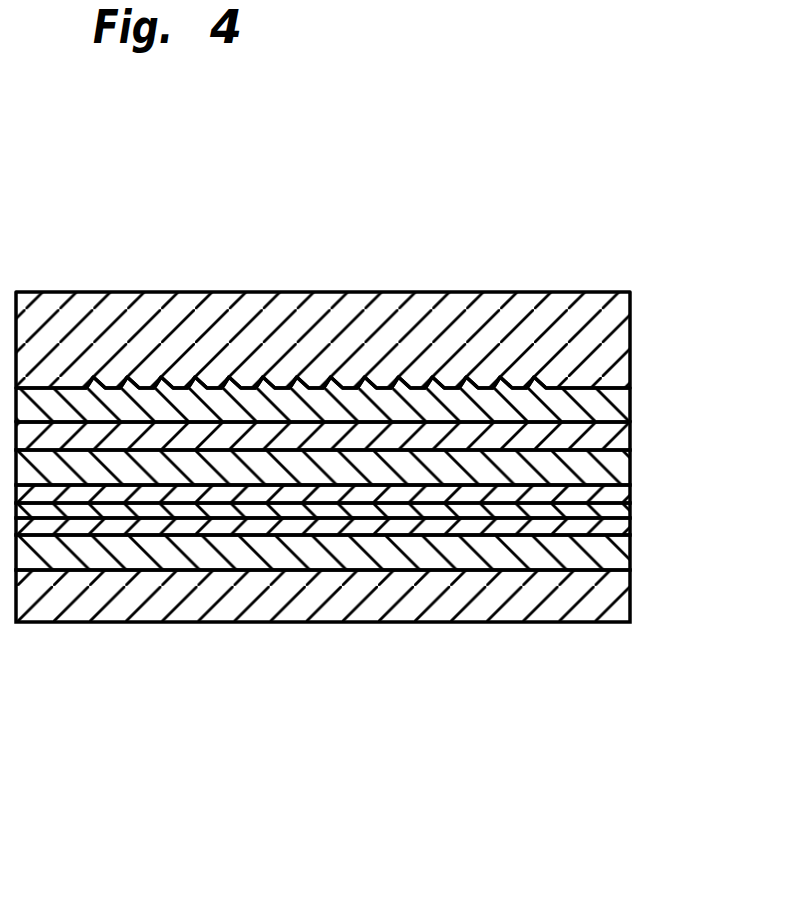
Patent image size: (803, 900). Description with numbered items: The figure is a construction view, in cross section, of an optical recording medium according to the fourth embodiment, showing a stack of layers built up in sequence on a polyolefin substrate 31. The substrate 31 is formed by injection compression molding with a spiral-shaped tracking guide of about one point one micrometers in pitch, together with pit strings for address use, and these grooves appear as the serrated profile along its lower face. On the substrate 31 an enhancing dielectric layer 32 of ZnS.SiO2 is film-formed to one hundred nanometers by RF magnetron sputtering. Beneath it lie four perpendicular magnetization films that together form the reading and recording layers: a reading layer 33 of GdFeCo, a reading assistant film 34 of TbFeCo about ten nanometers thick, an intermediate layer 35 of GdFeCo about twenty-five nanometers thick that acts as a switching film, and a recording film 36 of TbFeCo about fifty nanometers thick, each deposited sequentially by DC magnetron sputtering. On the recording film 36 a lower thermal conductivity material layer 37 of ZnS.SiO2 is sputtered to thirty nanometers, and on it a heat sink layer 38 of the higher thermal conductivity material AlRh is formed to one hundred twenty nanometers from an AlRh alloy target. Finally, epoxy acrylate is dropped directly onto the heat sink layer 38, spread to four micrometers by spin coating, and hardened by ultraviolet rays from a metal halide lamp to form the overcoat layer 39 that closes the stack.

The polyolefin substrate 31 is at (573, 313).
The dielectric layer 32 is at (606, 378).
The reading layer 33 is at (610, 426).
The reading assistant film 34 is at (605, 447).
The intermediate layer 35 is at (608, 488).
The recording film 36 is at (606, 508).
The lower thermal conductivity material layer 37 is at (622, 532).
The heat sink layer 38 is at (628, 572).
The overcoat layer 39 is at (547, 610).